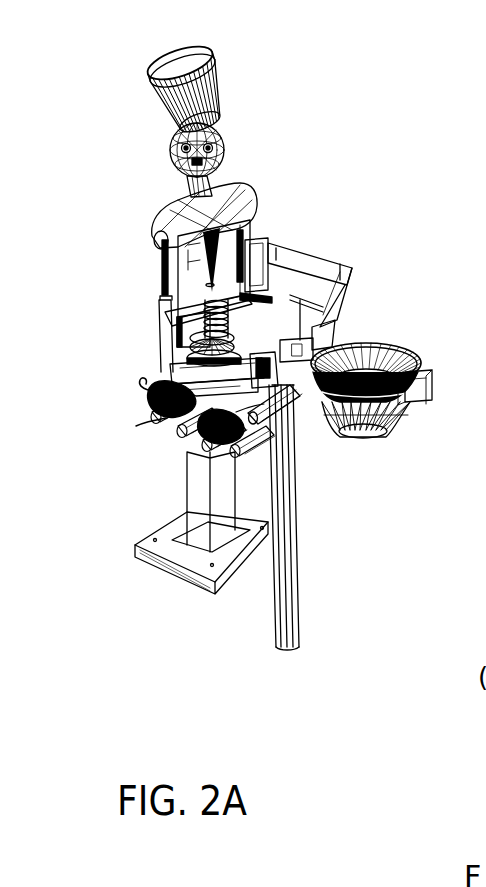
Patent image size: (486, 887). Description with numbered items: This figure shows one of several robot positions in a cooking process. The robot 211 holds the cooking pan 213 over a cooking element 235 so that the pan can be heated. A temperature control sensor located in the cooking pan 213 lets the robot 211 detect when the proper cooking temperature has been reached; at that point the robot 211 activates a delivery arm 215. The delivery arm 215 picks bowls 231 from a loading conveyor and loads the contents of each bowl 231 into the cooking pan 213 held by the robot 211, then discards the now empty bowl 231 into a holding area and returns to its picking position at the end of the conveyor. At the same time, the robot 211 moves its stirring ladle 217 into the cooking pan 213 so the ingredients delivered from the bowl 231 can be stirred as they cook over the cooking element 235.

The robot 211 is at (150, 247).
The cooking pan 213 is at (368, 342).
The delivery arm 215 is at (264, 395).
The stirring ladle 217 is at (294, 295).
The bowl 231 is at (140, 403).
The cooking element 235 is at (422, 405).